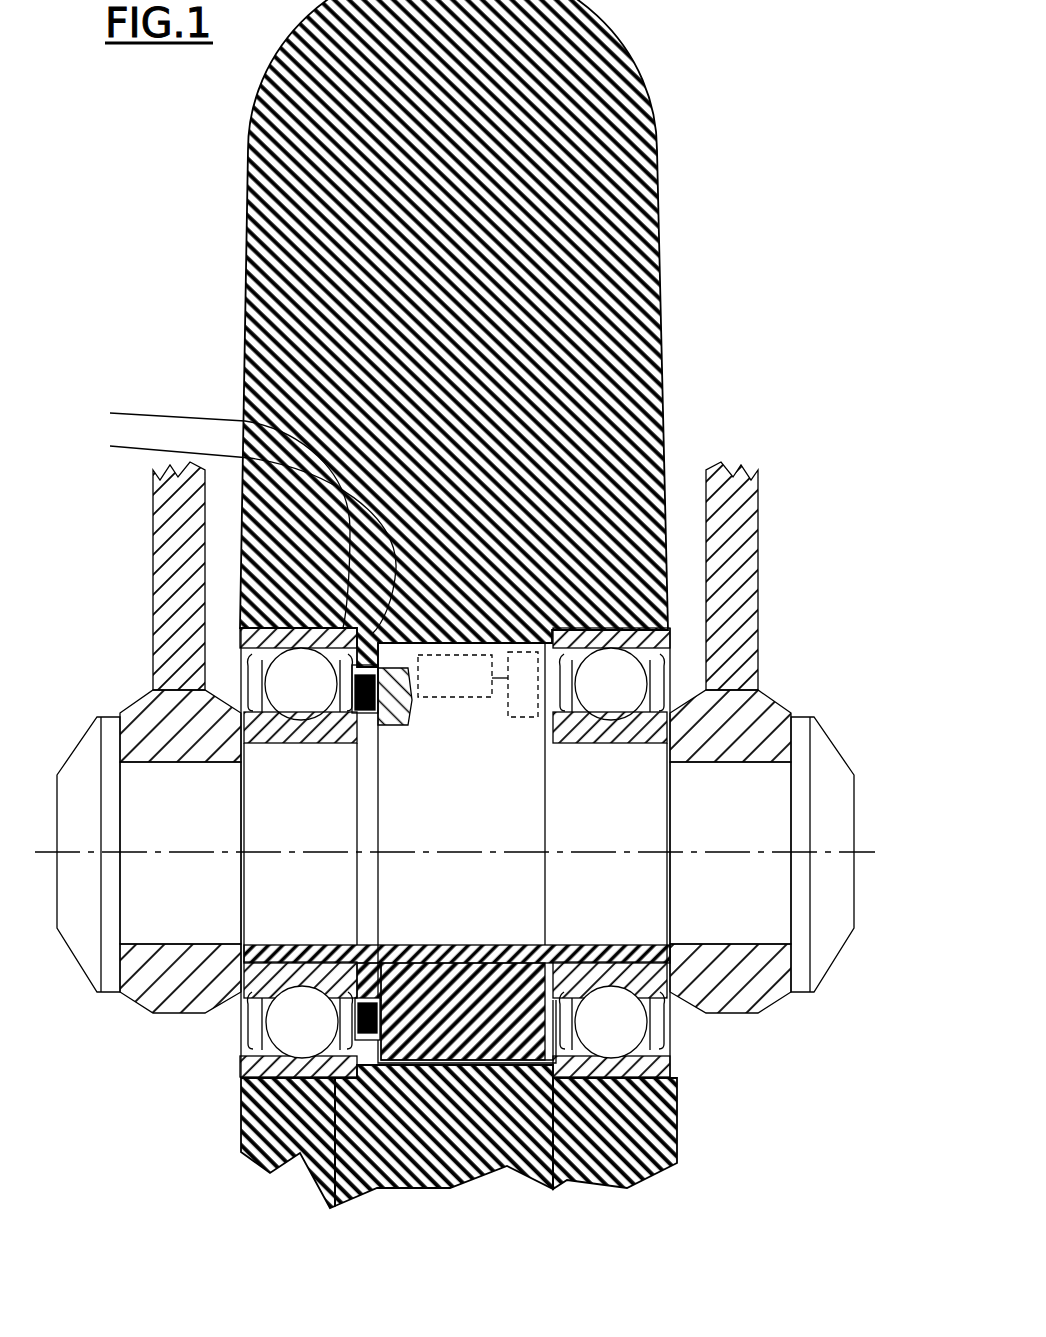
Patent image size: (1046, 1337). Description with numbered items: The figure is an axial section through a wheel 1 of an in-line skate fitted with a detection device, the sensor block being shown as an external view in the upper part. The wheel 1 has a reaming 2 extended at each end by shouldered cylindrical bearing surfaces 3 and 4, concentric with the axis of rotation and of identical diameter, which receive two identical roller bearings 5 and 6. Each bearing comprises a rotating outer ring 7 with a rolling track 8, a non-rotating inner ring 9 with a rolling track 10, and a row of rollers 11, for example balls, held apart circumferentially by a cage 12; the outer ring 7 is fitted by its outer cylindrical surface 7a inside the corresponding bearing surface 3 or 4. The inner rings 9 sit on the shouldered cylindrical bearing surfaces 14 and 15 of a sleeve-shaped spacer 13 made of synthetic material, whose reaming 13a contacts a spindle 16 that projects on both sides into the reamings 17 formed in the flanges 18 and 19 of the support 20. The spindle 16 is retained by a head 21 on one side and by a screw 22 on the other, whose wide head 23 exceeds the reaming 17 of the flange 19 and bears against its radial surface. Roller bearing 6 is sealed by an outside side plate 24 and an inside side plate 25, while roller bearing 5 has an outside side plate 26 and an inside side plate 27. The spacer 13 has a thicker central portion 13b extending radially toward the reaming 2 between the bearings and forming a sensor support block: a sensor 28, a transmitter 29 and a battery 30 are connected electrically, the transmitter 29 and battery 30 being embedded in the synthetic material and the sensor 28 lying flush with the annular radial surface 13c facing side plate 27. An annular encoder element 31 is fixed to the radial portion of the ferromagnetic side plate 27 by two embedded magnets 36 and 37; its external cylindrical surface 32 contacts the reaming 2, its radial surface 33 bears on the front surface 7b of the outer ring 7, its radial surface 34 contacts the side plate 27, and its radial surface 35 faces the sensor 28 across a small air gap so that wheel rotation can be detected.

The wheel 1 is at (668, 150).
The reaming 2 is at (488, 1140).
The shouldered cylindrical bearing surface 3 is at (278, 1100).
The shouldered cylindrical bearing surface 4 is at (640, 1085).
The roller bearing 5 is at (275, 1085).
The roller bearing 6 is at (632, 1095).
The rotating outer ring 7 is at (262, 637).
The outer cylindrical surface 7a is at (235, 532).
The front surface 7b is at (212, 512).
The rolling track 8 is at (262, 1068).
The non-rotating inner ring 9 is at (258, 716).
The rolling track 10 is at (298, 1027).
The rollers 11 is at (270, 1048).
The cage 12 is at (262, 1030).
The sleeve-shaped spacer 13 is at (310, 957).
The reaming 13a is at (470, 1000).
The central portion 13b is at (515, 1040).
The annular radial surface 13c is at (273, 598).
The shouldered cylindrical bearing surface 14 is at (173, 1010).
The shouldered cylindrical bearing surface 15 is at (676, 960).
The spindle 16 is at (76, 969).
The reamings 17 is at (120, 992).
The flange 18 is at (182, 520).
The flange 19 is at (730, 547).
The support 20 is at (148, 486).
The head 21 is at (75, 775).
The screw 22 is at (832, 780).
The wide head 23 is at (100, 740).
The sealing side plate 24 is at (670, 668).
The sealing side plate 25 is at (557, 684).
The outside side plate 26 is at (252, 657).
The inside side plate 27 is at (350, 683).
The sensor 28 is at (402, 712).
The transmitter 29 is at (460, 683).
The battery 30 is at (520, 700).
The encoder element 31 is at (372, 1012).
The external cylindrical surface 32 is at (352, 1035).
The radial surface 33 is at (333, 1050).
The radial surface 34 is at (308, 1072).
The radial surface 35 is at (446, 1063).
The magnet 36 is at (352, 760).
The magnet 37 is at (358, 943).